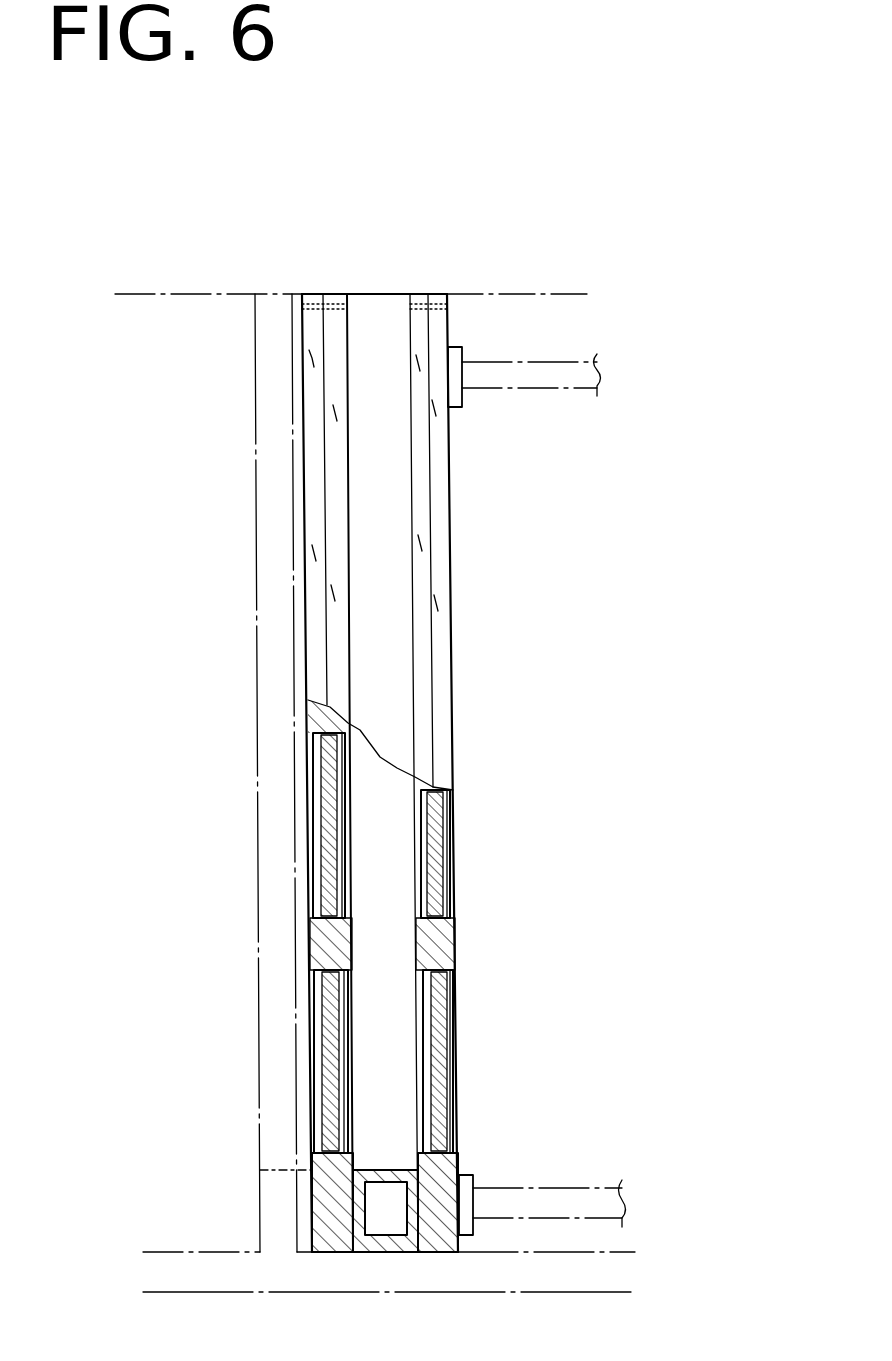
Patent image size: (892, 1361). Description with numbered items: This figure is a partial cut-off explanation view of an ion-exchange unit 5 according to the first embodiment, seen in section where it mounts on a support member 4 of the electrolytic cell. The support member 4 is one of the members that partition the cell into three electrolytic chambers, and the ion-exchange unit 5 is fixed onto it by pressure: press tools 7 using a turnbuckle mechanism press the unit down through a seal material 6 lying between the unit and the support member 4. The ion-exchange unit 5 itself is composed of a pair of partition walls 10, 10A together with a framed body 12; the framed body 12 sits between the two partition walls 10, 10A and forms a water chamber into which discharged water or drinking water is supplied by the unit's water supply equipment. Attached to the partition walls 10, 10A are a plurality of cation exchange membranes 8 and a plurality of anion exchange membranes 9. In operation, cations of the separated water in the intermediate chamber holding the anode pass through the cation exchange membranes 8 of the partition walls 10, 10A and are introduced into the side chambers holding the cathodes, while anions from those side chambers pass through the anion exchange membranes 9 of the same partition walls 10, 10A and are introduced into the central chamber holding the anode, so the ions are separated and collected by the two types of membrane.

The support member 4 is at (263, 530).
The ion-exchange unit 5 is at (576, 555).
The seal material 6 is at (300, 1155).
The press tool 7 is at (545, 362).
The cation exchange membrane 8 is at (330, 1072).
The anion exchange membrane 9 is at (320, 805).
The partition wall 10 is at (323, 292).
The partition wall 10A is at (437, 292).
The framed body 12 is at (377, 292).